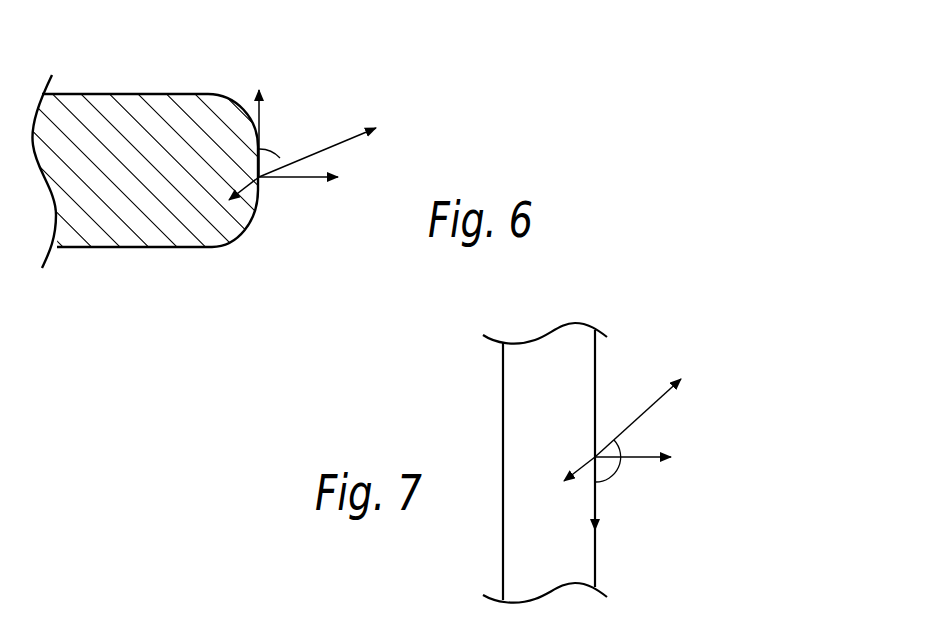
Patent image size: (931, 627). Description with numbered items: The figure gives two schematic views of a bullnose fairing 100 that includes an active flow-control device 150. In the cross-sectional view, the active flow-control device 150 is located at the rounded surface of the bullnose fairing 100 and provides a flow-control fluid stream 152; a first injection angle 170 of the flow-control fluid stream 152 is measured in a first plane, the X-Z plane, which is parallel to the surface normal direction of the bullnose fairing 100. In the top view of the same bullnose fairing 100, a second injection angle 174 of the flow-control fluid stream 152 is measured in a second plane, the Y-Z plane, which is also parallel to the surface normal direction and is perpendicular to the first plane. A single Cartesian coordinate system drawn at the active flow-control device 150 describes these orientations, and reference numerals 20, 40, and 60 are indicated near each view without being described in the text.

In FIG. 6, the system 20 is at (417, 61).
In FIG. 7, the system 20 is at (720, 314).
In FIG. 6, the assembly 40 is at (447, 98).
In FIG. 7, the assembly 40 is at (749, 351).
In FIG. 6, the component 60 is at (464, 142).
In FIG. 7, the component 60 is at (765, 394).
In FIG. 7, the bullnose fairing 100 is at (501, 542).
In FIG. 6, the active flow-control device 150 is at (290, 190).
In FIG. 7, the active flow-control device 150 is at (637, 479).
In FIG. 6, the flow-control fluid stream 152 is at (353, 142).
In FIG. 7, the flow-control fluid stream 152 is at (655, 407).
In FIG. 6, the first injection angle 170 is at (278, 150).
In FIG. 7, the second injection angle 174 is at (611, 478).